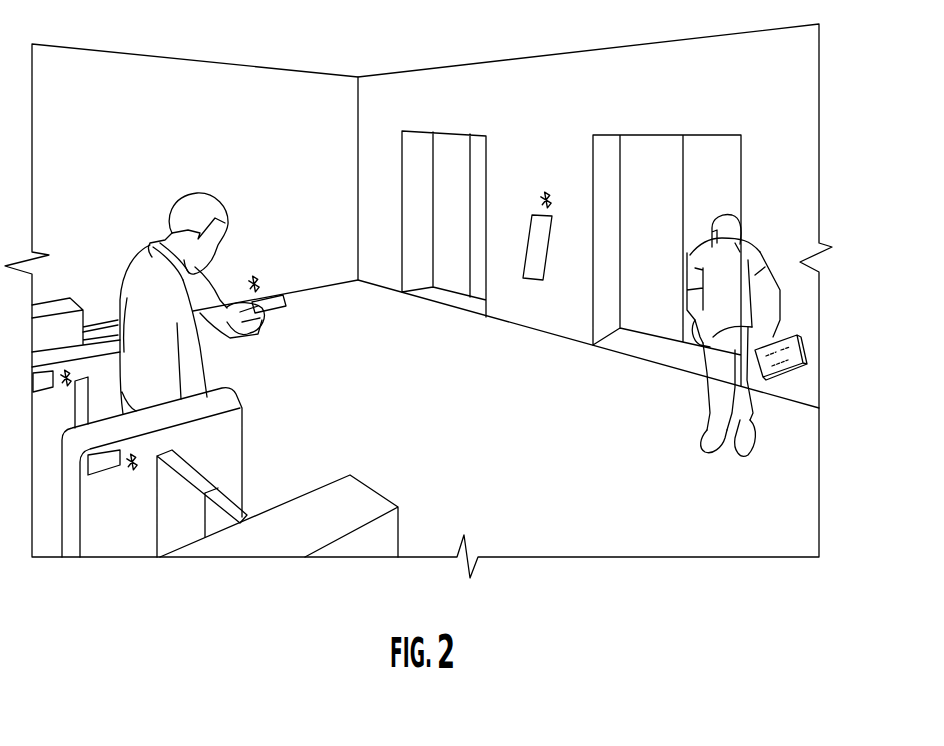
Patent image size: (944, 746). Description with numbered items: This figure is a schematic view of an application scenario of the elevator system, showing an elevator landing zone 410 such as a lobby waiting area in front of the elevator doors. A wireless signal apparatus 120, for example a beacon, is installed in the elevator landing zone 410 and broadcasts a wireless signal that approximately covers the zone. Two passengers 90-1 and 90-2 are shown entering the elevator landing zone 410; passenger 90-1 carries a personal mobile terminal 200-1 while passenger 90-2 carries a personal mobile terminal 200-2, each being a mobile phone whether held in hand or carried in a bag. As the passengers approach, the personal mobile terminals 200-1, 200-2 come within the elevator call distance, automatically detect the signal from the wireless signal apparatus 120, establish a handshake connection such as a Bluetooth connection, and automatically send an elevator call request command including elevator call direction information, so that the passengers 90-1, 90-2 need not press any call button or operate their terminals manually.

The elevator landing zone 410 is at (278, 53).
The wireless signal apparatus 120 is at (532, 273).
The passenger 90-2 is at (173, 202).
The personal mobile terminal 200-2 is at (265, 308).
The passenger 90-1 is at (739, 234).
The personal mobile terminal 200-1 is at (806, 353).